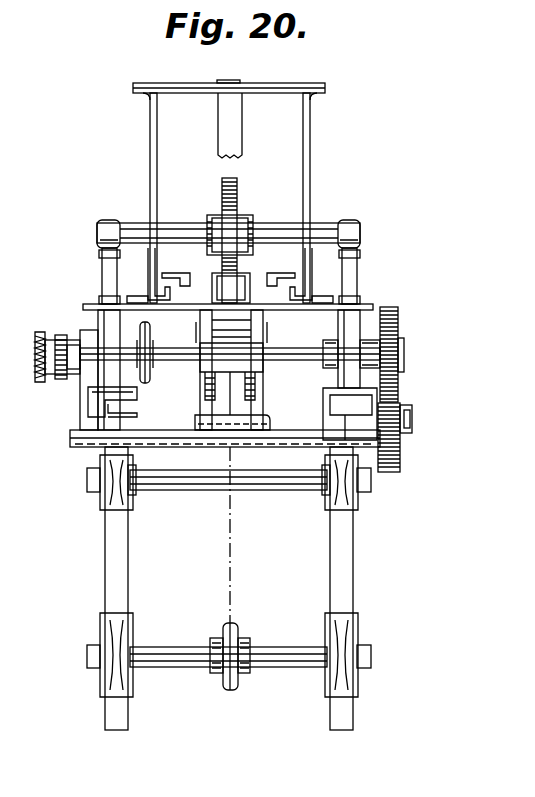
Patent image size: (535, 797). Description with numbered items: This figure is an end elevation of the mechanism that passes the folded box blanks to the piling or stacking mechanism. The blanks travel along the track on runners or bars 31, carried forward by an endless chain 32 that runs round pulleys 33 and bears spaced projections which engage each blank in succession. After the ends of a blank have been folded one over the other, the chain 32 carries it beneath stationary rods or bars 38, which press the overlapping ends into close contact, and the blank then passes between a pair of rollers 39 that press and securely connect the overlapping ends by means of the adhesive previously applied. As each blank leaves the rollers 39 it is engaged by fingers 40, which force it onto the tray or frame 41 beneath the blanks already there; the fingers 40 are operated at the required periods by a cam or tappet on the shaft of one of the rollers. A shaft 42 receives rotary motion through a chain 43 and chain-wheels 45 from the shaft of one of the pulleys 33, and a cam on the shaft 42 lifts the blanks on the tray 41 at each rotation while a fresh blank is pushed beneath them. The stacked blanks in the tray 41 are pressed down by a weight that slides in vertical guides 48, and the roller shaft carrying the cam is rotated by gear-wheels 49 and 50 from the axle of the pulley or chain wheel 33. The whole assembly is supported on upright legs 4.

The legs 4 is at (115, 568).
The runners or bars 31 is at (165, 292).
The endless chain 32 is at (233, 572).
The pulleys 33 is at (231, 690).
The stationary rods or bars 38 is at (166, 276).
The roller 39 is at (238, 196).
The fingers 40 is at (200, 330).
The tray or frame 41 is at (88, 304).
The shaft 42 is at (292, 362).
The chain 43 is at (145, 383).
The chain-wheel 45 is at (162, 360).
The vertical guides 48 is at (150, 175).
The gear-wheel 49 is at (400, 328).
The gear-wheel 50 is at (400, 464).